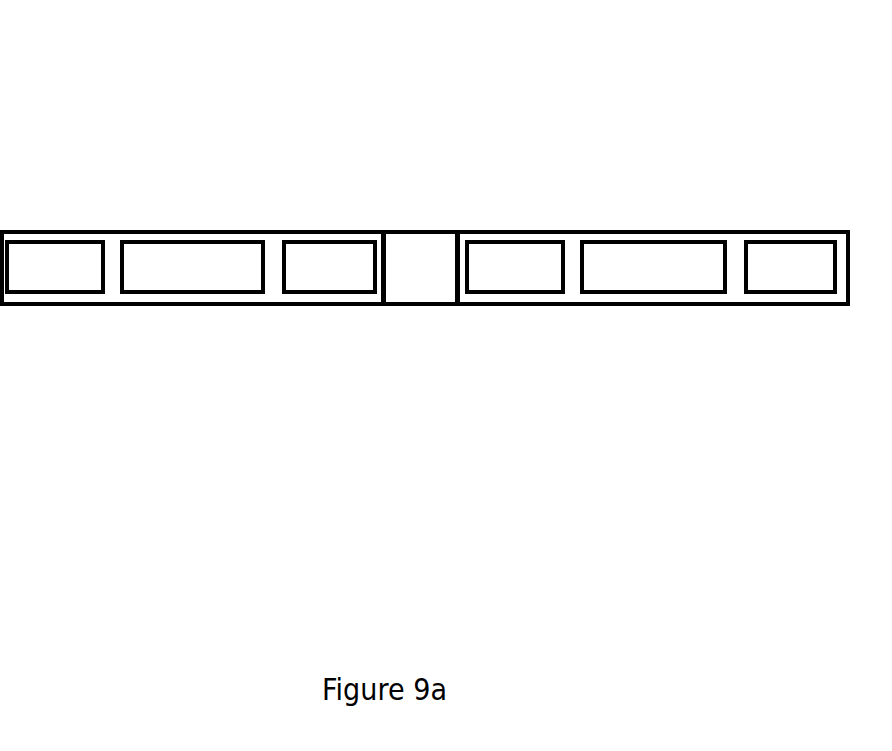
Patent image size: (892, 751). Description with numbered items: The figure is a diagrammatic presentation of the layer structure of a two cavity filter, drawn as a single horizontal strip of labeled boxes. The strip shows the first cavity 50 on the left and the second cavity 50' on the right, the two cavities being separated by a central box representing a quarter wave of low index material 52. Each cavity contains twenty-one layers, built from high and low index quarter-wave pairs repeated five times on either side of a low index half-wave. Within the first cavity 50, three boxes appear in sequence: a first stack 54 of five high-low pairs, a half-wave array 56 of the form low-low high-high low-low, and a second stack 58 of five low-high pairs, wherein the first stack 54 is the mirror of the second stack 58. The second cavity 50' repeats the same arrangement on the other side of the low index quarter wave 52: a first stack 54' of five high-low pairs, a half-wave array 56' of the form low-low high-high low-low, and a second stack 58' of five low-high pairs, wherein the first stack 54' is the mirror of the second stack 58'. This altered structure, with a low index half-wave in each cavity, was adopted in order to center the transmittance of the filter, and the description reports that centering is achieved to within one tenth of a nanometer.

The first cavity 50 is at (192, 174).
The second cavity 50' is at (653, 167).
The quarter wave of low index material 52 is at (410, 230).
The first stack 54 is at (55, 368).
The half-wave array 56 is at (192, 368).
The second stack 58 is at (329, 368).
The first stack 54' is at (515, 366).
The half-wave array 56' is at (653, 362).
The second stack 58' is at (790, 356).